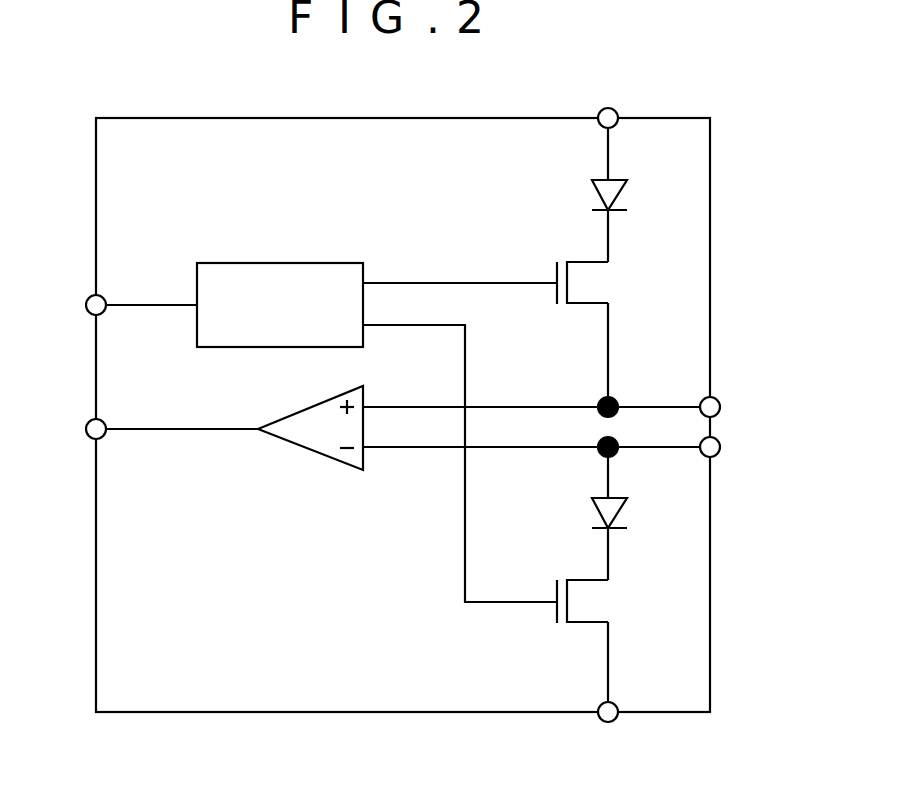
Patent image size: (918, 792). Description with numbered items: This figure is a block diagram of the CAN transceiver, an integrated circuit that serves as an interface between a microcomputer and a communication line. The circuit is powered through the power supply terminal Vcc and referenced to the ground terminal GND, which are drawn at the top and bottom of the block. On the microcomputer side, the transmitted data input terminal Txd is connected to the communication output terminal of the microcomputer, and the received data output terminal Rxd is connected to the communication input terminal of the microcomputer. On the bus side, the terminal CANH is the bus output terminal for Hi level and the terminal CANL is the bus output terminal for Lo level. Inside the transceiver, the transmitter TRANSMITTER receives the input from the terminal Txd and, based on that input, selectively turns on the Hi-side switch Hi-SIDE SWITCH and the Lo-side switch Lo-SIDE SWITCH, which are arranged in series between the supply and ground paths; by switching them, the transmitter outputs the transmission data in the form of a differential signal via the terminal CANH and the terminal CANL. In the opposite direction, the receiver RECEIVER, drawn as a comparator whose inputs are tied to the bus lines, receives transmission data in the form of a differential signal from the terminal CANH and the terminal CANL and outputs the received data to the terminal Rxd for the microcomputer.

The power supply terminal Vcc is at (606, 103).
The ground terminal GND is at (608, 728).
The transmitted data input terminal Txd is at (70, 306).
The received data output terminal Rxd is at (70, 430).
The bus output terminal for Hi level CANH is at (770, 386).
The bus output terminal for Lo level CANL is at (720, 452).
The transmitter TRANSMITTER is at (277, 263).
The receiver RECEIVER is at (302, 452).
The Hi-side switch Hi-SIDE SWITCH is at (557, 266).
The Lo-side switch Lo-SIDE SWITCH is at (557, 603).